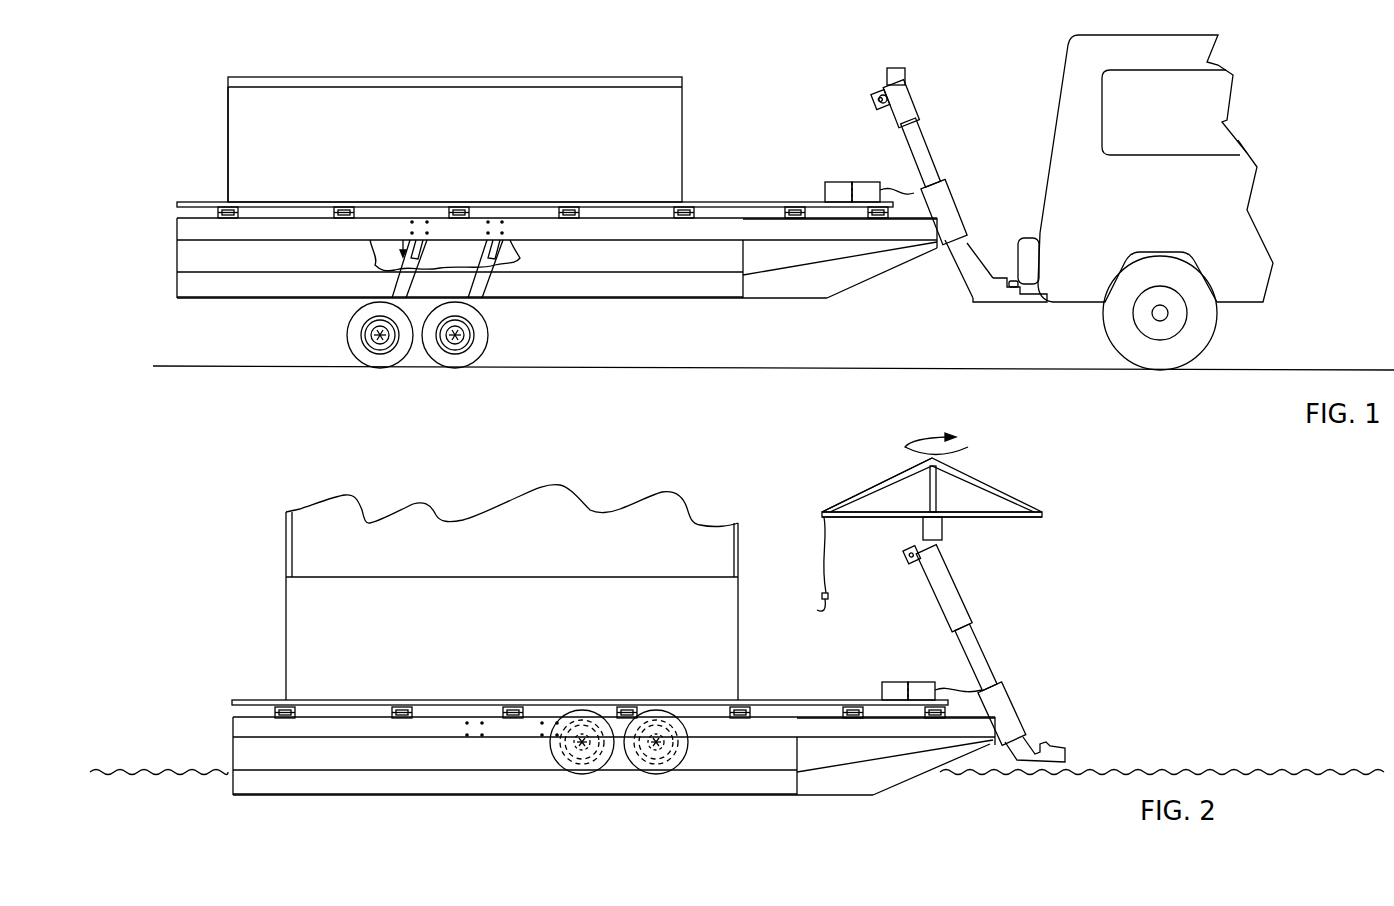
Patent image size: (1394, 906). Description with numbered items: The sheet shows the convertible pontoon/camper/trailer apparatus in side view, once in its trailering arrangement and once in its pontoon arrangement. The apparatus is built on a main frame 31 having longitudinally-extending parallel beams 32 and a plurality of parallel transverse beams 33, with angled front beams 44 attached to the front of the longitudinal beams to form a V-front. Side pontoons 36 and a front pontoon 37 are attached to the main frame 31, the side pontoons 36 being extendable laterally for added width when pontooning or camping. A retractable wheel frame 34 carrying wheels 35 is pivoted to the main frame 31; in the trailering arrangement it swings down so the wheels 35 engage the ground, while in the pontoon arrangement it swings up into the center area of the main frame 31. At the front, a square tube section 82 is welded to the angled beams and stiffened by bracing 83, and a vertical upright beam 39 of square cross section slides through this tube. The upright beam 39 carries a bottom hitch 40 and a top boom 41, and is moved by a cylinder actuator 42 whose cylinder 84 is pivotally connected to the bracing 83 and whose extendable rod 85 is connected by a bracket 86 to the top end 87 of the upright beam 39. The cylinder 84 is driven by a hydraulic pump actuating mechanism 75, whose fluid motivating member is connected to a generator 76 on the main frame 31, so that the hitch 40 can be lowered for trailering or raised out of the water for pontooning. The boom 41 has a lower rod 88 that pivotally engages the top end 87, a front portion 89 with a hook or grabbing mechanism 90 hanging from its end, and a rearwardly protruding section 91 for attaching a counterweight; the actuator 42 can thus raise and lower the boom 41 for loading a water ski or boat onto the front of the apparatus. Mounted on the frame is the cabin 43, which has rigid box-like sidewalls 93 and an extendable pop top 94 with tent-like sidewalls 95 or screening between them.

In FIG. 1, the main frame 31 is at (745, 212).
In FIG. 2, the main frame 31 is at (338, 745).
In FIG. 1, the longitudinally-extending parallel beams 32 is at (569, 236).
In FIG. 2, the longitudinally-extending parallel beams 32 is at (614, 776).
In FIG. 1, the transverse beams 33 is at (240, 190).
In FIG. 2, the transverse beams 33 is at (292, 705).
In FIG. 1, the retractable wheel frame 34 is at (495, 295).
In FIG. 1, the wheels 35 is at (348, 320).
In FIG. 1, the side pontoons 36 is at (650, 292).
In FIG. 2, the side pontoons 36 is at (762, 790).
In FIG. 1, the front pontoon 37 is at (850, 280).
In FIG. 2, the front pontoon 37 is at (922, 785).
In FIG. 1, the vertical upright beam 39 is at (923, 150).
In FIG. 1, the bottom hitch 40 is at (992, 275).
In FIG. 2, the bottom hitch 40 is at (1043, 740).
In FIG. 2, the top boom 41 is at (931, 522).
In FIG. 2, the cylinder actuator 42 is at (944, 644).
In FIG. 1, the cabin 43 is at (465, 102).
In FIG. 2, the cabin 43 is at (525, 574).
In FIG. 1, the angled front beam 44 is at (921, 232).
In FIG. 2, the angled front beam 44 is at (900, 733).
In FIG. 1, the pump actuating mechanism 75 is at (880, 182).
In FIG. 2, the pump actuating mechanism 75 is at (928, 682).
In FIG. 1, the generator 76 is at (842, 182).
In FIG. 2, the generator 76 is at (888, 682).
In FIG. 1, the square tube section 82 is at (960, 215).
In FIG. 1, the bracing 83 is at (934, 212).
In FIG. 1, the cylinder 84 is at (910, 130).
In FIG. 1, the extendable rod 85 is at (876, 112).
In FIG. 1, the bracket 86 is at (880, 95).
In FIG. 1, the top end of the upright beam 87 is at (905, 80).
In FIG. 2, the top end of the upright beam 87 is at (915, 548).
In FIG. 2, the lower rod 88 is at (942, 525).
In FIG. 2, the front portion 89 is at (833, 512).
In FIG. 2, the hoist cable and hook 90 is at (822, 592).
In FIG. 2, the rearwardly protruding section 91 is at (1020, 502).
In FIG. 1, the rigid box-like sidewalls 93 is at (320, 100).
In FIG. 2, the rigid box-like sidewalls 93 is at (420, 593).
In FIG. 1, the extendable pop top 94 is at (378, 77).
In FIG. 2, the tent-like sidewalls 95 is at (535, 505).